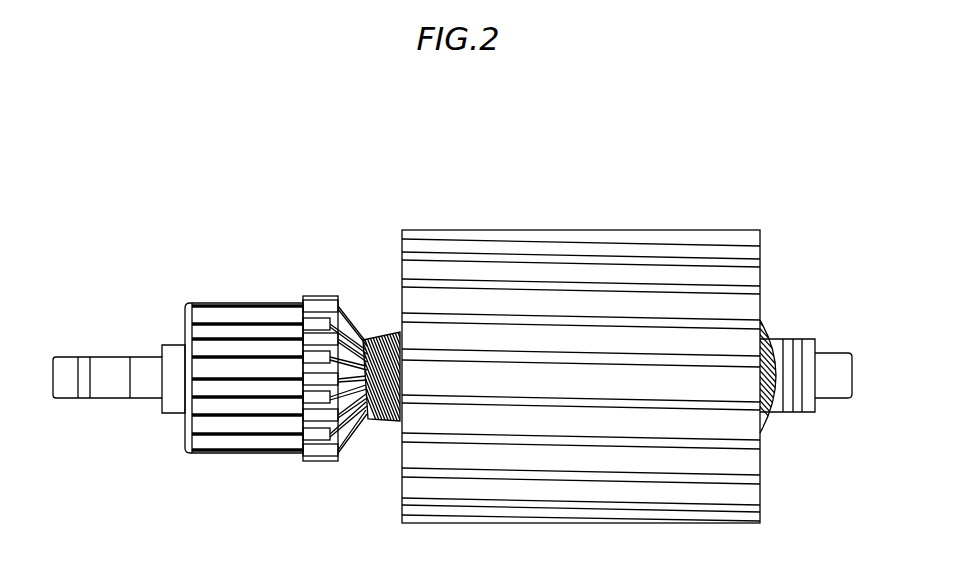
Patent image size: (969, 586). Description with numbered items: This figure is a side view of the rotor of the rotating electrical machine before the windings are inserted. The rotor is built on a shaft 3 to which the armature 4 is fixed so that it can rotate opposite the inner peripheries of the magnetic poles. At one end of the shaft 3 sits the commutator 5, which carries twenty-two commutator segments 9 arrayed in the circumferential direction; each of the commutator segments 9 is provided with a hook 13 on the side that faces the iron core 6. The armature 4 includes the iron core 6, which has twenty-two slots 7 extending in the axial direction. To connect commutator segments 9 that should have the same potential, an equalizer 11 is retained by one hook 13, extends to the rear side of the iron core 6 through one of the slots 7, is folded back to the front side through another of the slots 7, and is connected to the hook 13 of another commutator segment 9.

The shaft 3 is at (177, 403).
The armature 4 is at (376, 260).
The commutator 5 is at (225, 352).
The iron core 6 is at (553, 230).
The slots 7 is at (752, 322).
The commutator segments 9 is at (221, 328).
The equalizer 11 is at (350, 432).
The hooks 13 is at (310, 294).